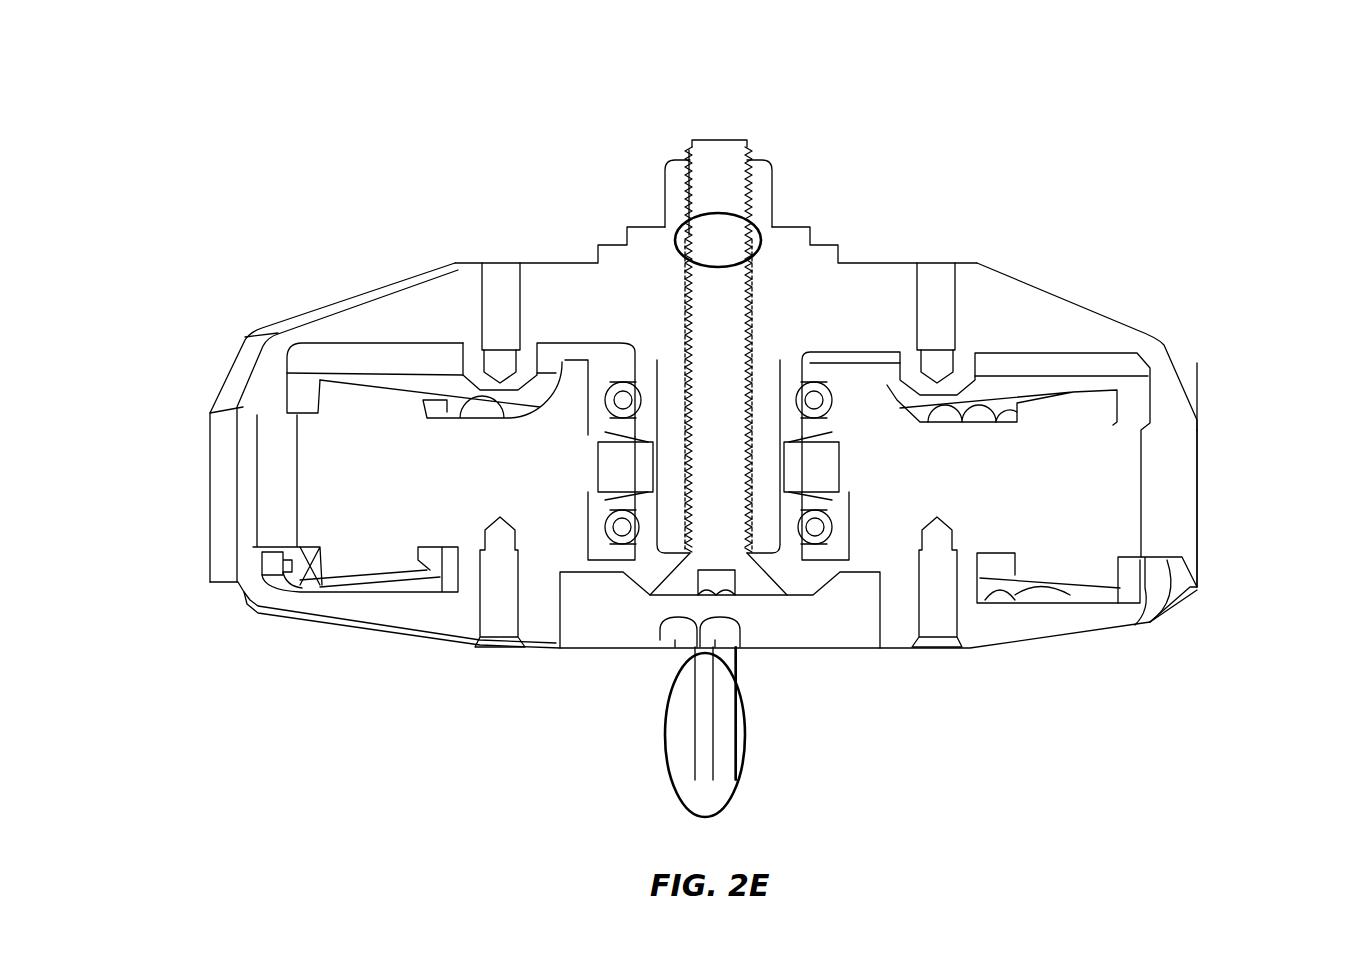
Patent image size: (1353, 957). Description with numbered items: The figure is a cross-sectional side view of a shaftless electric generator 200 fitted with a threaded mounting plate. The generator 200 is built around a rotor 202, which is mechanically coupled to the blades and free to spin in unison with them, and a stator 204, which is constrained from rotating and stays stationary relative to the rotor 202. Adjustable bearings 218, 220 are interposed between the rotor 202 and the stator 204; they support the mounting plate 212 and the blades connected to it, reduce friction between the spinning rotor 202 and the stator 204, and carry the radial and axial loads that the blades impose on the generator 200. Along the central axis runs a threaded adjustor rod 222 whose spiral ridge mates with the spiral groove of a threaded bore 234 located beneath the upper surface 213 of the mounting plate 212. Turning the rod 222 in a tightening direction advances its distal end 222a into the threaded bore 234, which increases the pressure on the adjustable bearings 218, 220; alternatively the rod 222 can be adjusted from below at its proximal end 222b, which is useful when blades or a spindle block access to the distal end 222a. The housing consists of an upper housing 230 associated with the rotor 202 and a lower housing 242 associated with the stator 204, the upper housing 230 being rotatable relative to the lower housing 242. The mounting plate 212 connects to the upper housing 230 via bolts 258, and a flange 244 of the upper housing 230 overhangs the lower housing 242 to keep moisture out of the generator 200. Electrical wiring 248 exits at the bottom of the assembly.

The shaftless electric generator 200 is at (208, 62).
The rotor 202 is at (222, 474).
The stator 204 is at (255, 612).
The mounting plate 212 is at (845, 262).
The upper surface 213 is at (787, 228).
The adjustable bearing 218 is at (622, 400).
The adjustable bearing 220 is at (622, 540).
The threaded adjustor rod 222 is at (738, 372).
The distal end 222a is at (762, 238).
The proximal end 222b is at (803, 537).
The upper housing 230 is at (1112, 323).
The threaded bore 234 is at (680, 240).
The lower housing 242 is at (1130, 605).
The flange 244 is at (1197, 575).
The electrical wiring 248 is at (665, 740).
The bolts 258 is at (478, 325).